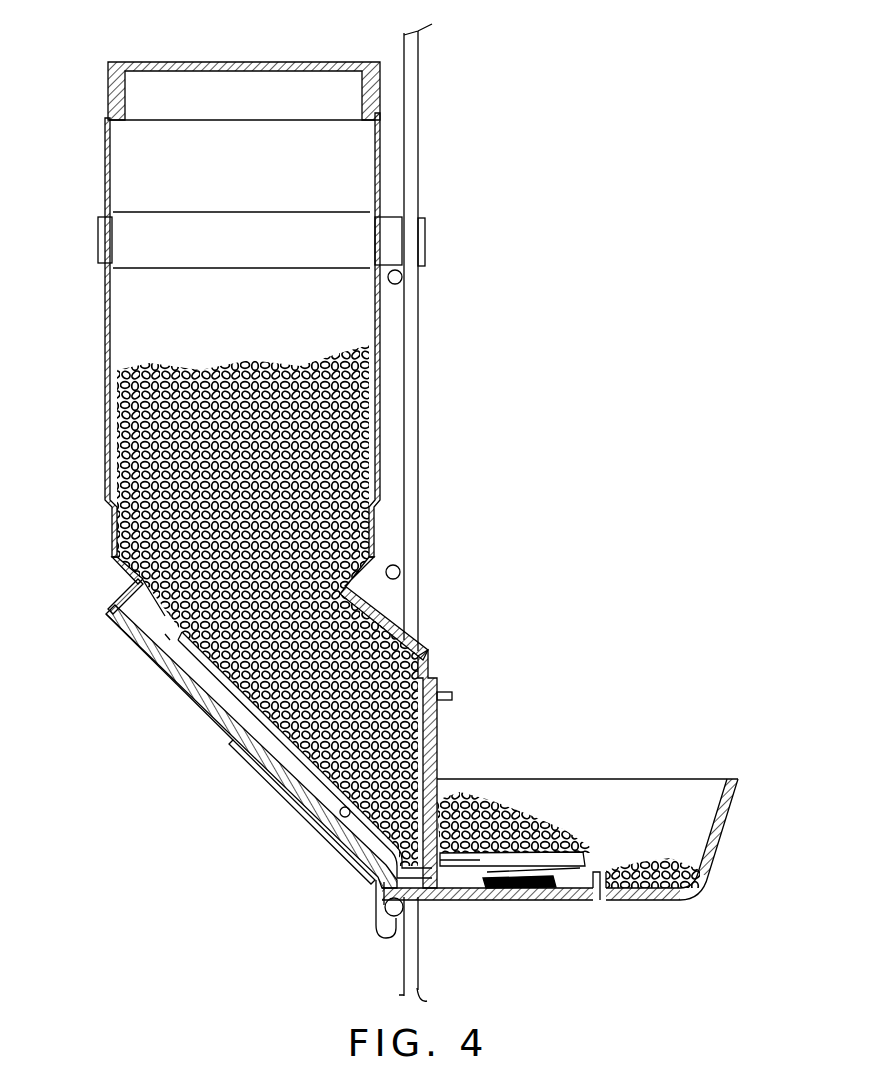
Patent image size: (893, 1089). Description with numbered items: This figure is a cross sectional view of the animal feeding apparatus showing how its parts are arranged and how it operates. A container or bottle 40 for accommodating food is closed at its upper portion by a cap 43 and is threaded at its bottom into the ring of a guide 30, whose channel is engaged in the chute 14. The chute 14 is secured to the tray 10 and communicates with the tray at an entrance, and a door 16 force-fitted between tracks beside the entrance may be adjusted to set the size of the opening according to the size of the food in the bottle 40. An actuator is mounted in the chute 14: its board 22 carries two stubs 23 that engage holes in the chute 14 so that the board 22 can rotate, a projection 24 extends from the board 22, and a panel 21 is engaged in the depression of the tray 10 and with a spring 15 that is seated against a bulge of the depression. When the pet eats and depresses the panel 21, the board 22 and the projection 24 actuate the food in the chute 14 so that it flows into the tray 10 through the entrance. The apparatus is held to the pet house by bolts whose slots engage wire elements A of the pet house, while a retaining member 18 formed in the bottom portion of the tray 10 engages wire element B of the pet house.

The tray 10 is at (731, 822).
The chute 14 is at (294, 806).
The spring 15 is at (562, 898).
The door 16 is at (440, 719).
The retaining member 18 is at (374, 918).
The panel 21 is at (568, 832).
The board 22 is at (168, 637).
The stubs 23 is at (343, 821).
The projection 24 is at (203, 700).
The guide 30 is at (109, 610).
The bottle 40 is at (103, 318).
The cap 43 is at (325, 70).
The wire element of the pet house A is at (425, 237).
The wire element of the pet house B is at (400, 909).